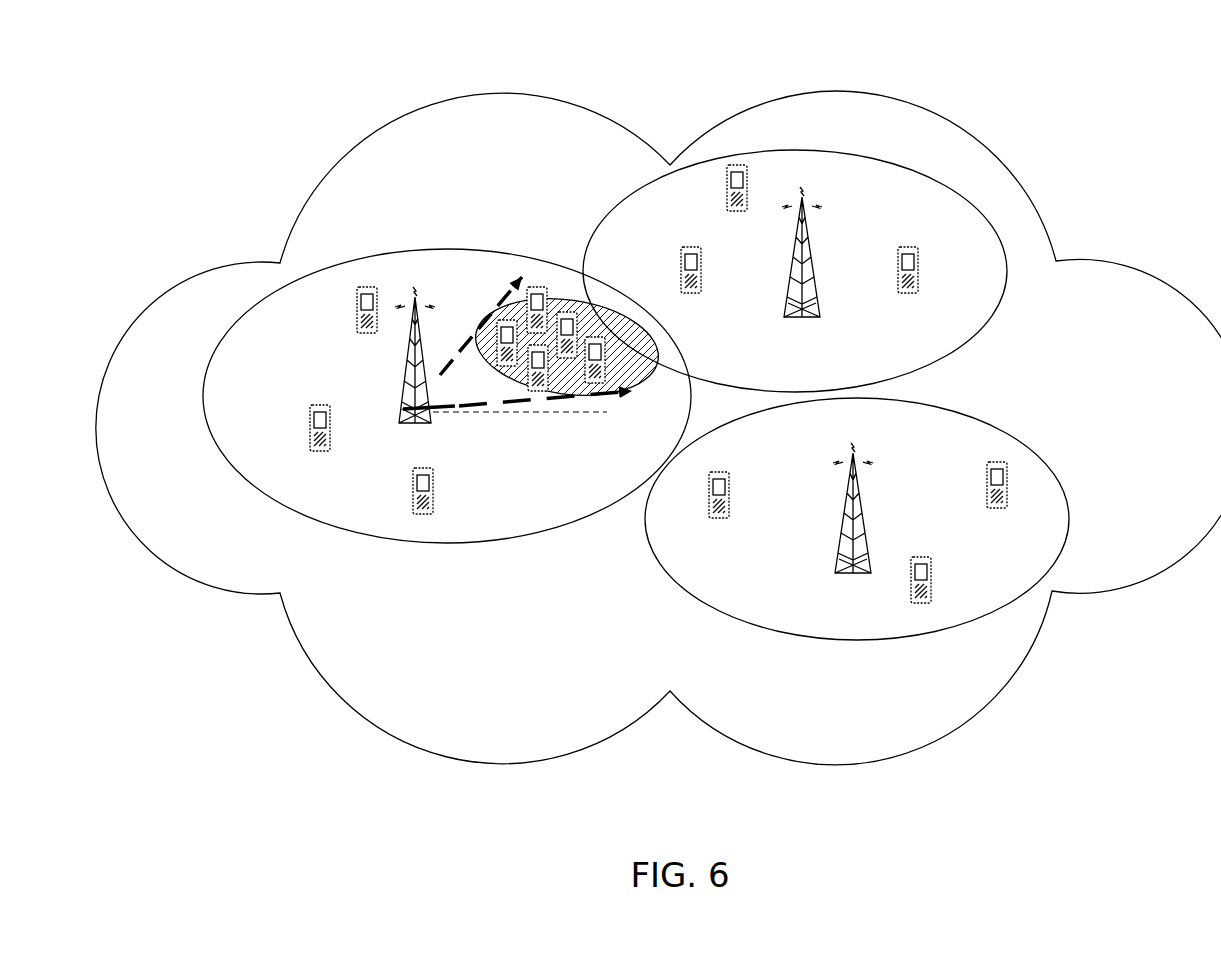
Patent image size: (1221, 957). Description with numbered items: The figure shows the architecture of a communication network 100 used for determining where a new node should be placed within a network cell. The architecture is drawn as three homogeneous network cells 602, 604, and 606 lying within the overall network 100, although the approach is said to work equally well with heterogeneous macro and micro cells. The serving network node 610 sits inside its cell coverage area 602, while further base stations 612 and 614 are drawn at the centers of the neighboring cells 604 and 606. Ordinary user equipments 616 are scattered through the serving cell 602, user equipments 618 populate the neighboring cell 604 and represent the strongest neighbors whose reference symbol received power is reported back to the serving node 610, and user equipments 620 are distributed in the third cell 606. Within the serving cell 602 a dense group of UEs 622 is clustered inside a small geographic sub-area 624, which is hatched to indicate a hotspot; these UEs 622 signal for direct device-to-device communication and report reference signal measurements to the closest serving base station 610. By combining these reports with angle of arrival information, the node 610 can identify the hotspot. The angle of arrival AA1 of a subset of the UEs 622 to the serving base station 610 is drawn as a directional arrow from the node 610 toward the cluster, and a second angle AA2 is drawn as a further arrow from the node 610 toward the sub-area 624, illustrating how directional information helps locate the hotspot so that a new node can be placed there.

The wireless communication system 100 is at (250, 258).
The network cell 602 is at (370, 253).
The network cell 604 is at (890, 163).
The network cell 606 is at (800, 642).
The network node 610 is at (410, 312).
The second base station 612 is at (806, 212).
The third base station 614 is at (858, 578).
The UEs 616 is at (366, 334).
The strongest neighbors 618 is at (692, 244).
The user equipment in third cell 620 is at (719, 519).
The UEs 622 is at (592, 333).
The geographic sub-area 624 is at (572, 296).
The angle of arrival AA1 is at (517, 404).
The second active antenna beam AA2 is at (453, 365).